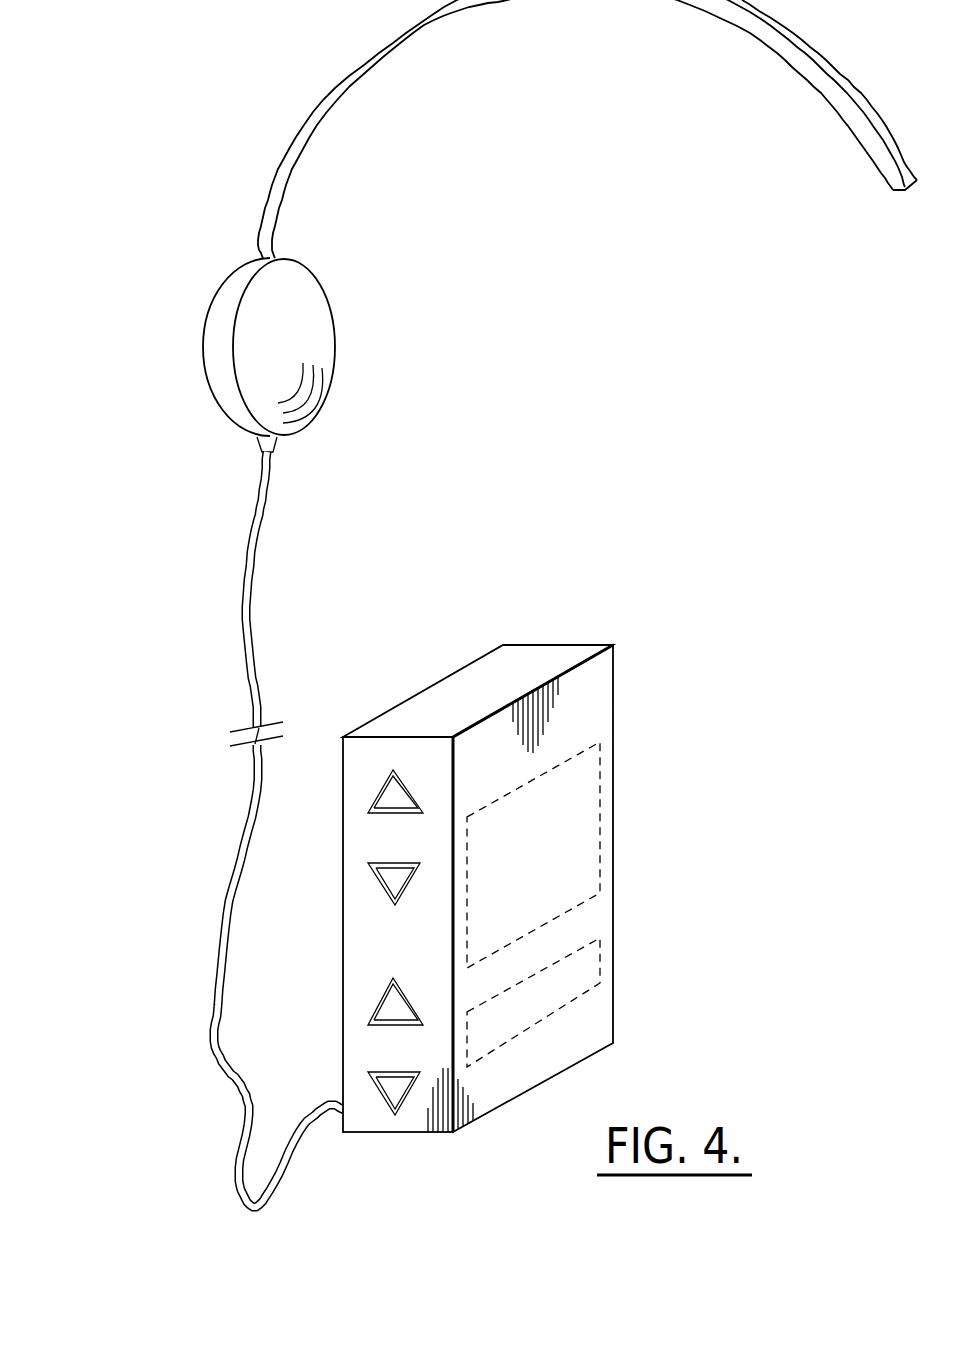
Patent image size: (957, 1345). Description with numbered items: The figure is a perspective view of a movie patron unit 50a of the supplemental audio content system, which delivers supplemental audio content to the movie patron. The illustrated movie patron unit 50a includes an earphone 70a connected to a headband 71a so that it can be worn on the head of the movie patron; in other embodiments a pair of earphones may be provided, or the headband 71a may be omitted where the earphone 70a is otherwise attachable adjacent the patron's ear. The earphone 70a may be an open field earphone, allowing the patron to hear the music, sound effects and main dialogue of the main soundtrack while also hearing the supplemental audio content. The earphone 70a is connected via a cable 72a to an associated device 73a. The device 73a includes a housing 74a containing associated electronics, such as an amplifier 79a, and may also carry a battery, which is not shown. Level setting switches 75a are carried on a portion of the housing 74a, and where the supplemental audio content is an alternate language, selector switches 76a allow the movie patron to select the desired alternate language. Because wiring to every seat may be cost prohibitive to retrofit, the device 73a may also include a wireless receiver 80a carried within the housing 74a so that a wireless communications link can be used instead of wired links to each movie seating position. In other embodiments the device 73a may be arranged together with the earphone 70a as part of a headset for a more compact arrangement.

The movie patron unit 50a is at (150, 330).
The headband 71a is at (287, 157).
The earphone 70a is at (215, 393).
The cable 72a is at (226, 905).
The device 73a is at (615, 750).
The housing 74a is at (613, 898).
The level setting switches 75a is at (392, 803).
The selector switches 76a is at (392, 1008).
The wireless receiver 80a is at (603, 848).
The amplifier 79a is at (603, 982).